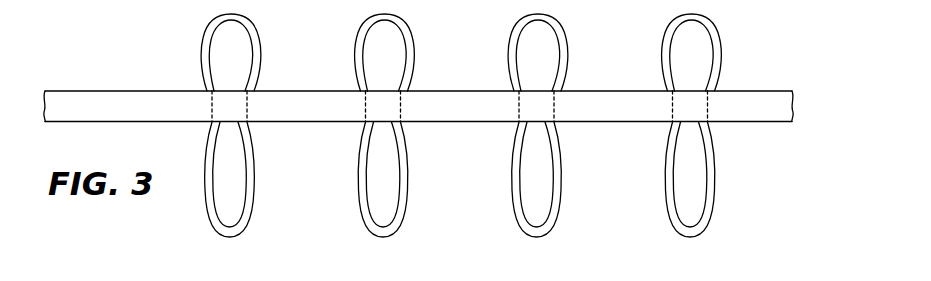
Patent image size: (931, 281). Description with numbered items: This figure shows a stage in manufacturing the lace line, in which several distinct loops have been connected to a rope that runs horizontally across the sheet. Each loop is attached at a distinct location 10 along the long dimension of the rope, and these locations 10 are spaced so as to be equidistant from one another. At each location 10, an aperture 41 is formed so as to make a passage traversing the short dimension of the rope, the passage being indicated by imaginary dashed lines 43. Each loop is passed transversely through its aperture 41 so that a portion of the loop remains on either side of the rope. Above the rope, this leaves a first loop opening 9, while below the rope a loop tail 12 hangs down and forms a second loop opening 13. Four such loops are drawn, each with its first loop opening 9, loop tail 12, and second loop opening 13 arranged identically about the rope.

The first loop opening 9 is at (232, 46).
The distinct location 10 is at (252, 89).
The loop tail 12 is at (249, 224).
The second loop opening 13 is at (232, 192).
The aperture 41 is at (211, 97).
The imaginary dashed lines 43 is at (251, 117).